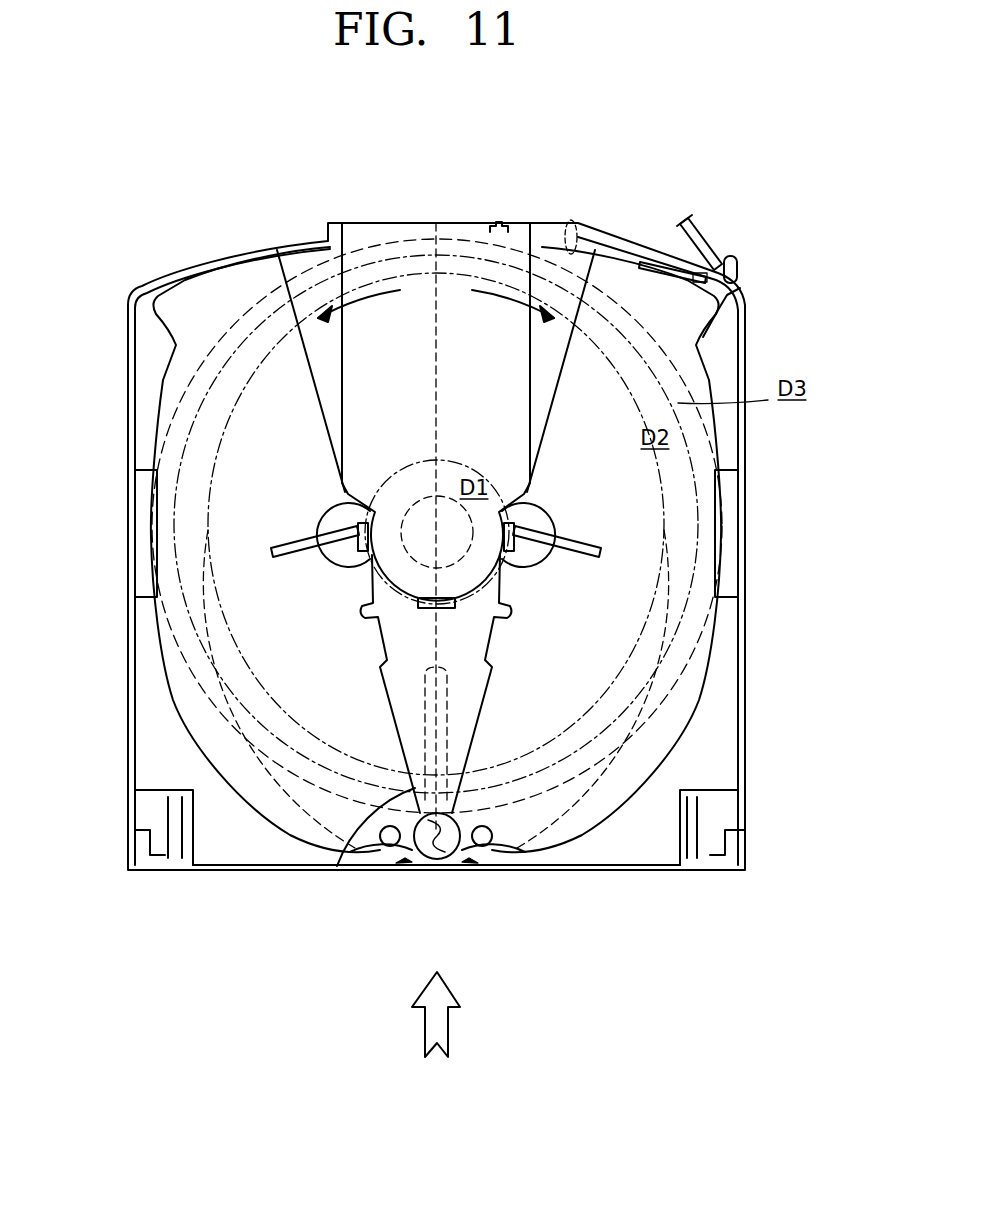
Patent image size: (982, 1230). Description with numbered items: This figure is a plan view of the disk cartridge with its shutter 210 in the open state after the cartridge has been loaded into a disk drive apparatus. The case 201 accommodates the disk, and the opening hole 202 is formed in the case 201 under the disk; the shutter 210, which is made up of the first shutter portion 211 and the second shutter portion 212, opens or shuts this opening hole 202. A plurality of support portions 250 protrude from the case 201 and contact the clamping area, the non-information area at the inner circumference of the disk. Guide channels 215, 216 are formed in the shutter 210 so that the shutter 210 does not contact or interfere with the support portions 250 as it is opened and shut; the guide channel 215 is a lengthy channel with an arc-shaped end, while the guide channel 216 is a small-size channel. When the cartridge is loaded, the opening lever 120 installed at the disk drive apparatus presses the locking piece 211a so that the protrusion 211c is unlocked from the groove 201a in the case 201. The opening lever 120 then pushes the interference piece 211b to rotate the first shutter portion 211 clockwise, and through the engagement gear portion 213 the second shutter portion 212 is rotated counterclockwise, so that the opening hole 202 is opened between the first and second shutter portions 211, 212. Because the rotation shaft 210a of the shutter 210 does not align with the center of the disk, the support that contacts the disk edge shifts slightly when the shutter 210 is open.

The case 201 is at (128, 380).
The groove 201a is at (498, 224).
The opening hole 202 is at (415, 265).
The opening lever 120 is at (708, 240).
The protrusion 211c is at (658, 260).
The interference piece 211b is at (745, 258).
The locking piece 211a is at (748, 290).
The support portion 250 is at (345, 520).
The guide channel 215 is at (263, 565).
The guide channel 216 is at (512, 625).
The second shutter portion 212 is at (310, 798).
The first shutter portion 211 is at (352, 852).
The rotation shaft 210a is at (390, 846).
The engagement gear portion 213 is at (437, 860).
The shutter 210 is at (435, 757).